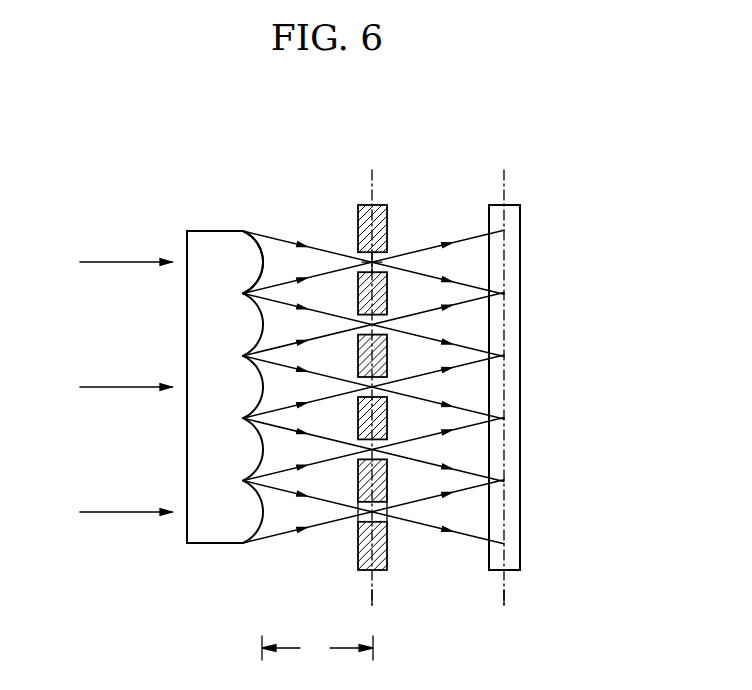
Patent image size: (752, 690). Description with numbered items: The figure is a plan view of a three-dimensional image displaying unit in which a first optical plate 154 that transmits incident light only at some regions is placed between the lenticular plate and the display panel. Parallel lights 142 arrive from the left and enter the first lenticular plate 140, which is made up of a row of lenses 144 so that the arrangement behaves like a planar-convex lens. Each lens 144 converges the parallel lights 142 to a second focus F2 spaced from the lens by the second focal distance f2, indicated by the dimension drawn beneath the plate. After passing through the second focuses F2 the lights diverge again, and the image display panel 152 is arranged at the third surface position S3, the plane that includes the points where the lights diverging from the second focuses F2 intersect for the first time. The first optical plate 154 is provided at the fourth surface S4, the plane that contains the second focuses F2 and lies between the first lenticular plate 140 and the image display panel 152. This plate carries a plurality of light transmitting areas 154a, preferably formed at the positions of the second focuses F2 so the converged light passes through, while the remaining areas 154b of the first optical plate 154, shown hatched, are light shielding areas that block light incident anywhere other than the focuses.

The first lenticular plate 140 is at (215, 231).
The parallel lights 142 is at (127, 262).
The lens 144 is at (247, 258).
The image display panel 152 is at (514, 205).
The first optical plate 154 is at (383, 380).
The light transmitting areas 154a is at (388, 546).
The light shielding areas 154b is at (362, 572).
The second focuses F2 is at (383, 256).
The third surface position S3 is at (505, 600).
The fourth surface S4 is at (372, 600).
The second focal distance f2 is at (317, 648).